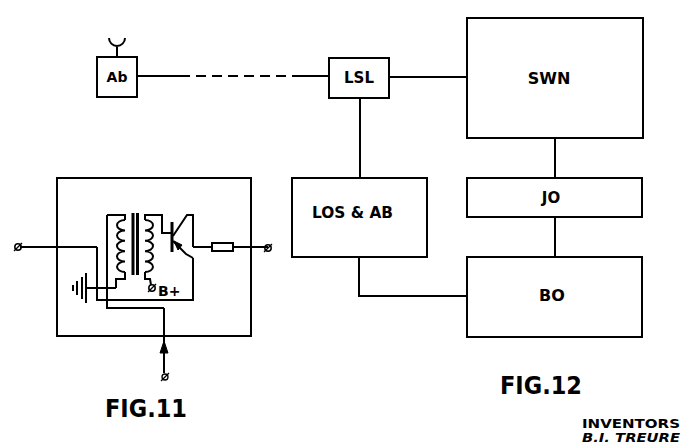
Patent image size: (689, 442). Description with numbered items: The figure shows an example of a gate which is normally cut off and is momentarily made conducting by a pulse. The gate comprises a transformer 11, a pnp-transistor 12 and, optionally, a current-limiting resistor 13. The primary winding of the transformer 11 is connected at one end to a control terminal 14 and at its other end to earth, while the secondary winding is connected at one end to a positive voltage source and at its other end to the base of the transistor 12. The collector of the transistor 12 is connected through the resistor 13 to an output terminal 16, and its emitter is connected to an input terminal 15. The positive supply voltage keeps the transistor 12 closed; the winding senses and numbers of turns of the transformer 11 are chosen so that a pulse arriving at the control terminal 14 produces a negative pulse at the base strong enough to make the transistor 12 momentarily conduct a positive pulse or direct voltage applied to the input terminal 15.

The transformer 11 is at (144, 203).
The pnp-transistor 12 is at (170, 219).
The current-limiting resistor 13 is at (231, 242).
The control terminal 14 is at (175, 347).
The input terminal 15 is at (15, 229).
The output terminal 16 is at (267, 244).